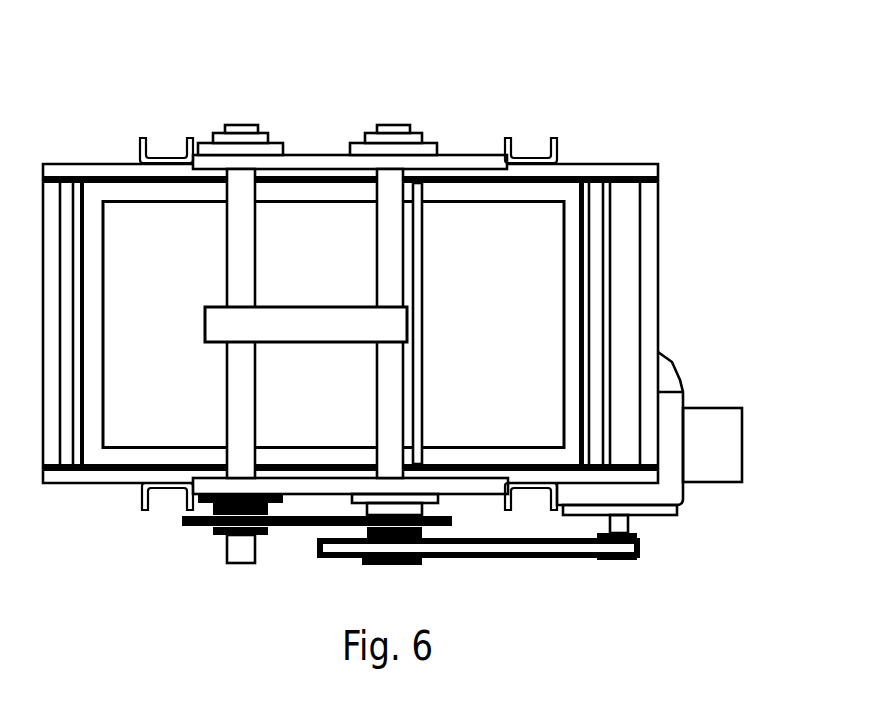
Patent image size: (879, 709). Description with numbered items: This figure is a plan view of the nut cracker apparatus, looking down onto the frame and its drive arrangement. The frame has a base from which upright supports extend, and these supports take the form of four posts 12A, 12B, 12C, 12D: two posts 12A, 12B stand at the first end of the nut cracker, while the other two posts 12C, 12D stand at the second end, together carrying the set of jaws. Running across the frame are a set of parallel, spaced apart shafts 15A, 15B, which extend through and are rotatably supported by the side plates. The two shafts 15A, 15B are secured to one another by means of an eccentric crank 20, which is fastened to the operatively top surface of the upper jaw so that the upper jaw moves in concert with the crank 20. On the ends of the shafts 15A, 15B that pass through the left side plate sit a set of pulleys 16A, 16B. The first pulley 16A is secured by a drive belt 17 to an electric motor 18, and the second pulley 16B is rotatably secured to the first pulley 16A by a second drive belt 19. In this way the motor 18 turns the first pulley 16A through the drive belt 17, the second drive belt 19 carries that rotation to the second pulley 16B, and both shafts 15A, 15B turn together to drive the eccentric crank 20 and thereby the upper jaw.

The post 12A is at (537, 487).
The post 12B is at (528, 158).
The post 12C is at (140, 492).
The post 12D is at (172, 155).
The shaft 15A is at (386, 187).
The shaft 15B is at (238, 187).
The first pulley 16A is at (417, 560).
The second pulley 16B is at (190, 535).
The drive belt 17 is at (570, 548).
The electric motor 18 is at (672, 487).
The second drive belt 19 is at (308, 524).
The eccentric crank 20 is at (230, 325).